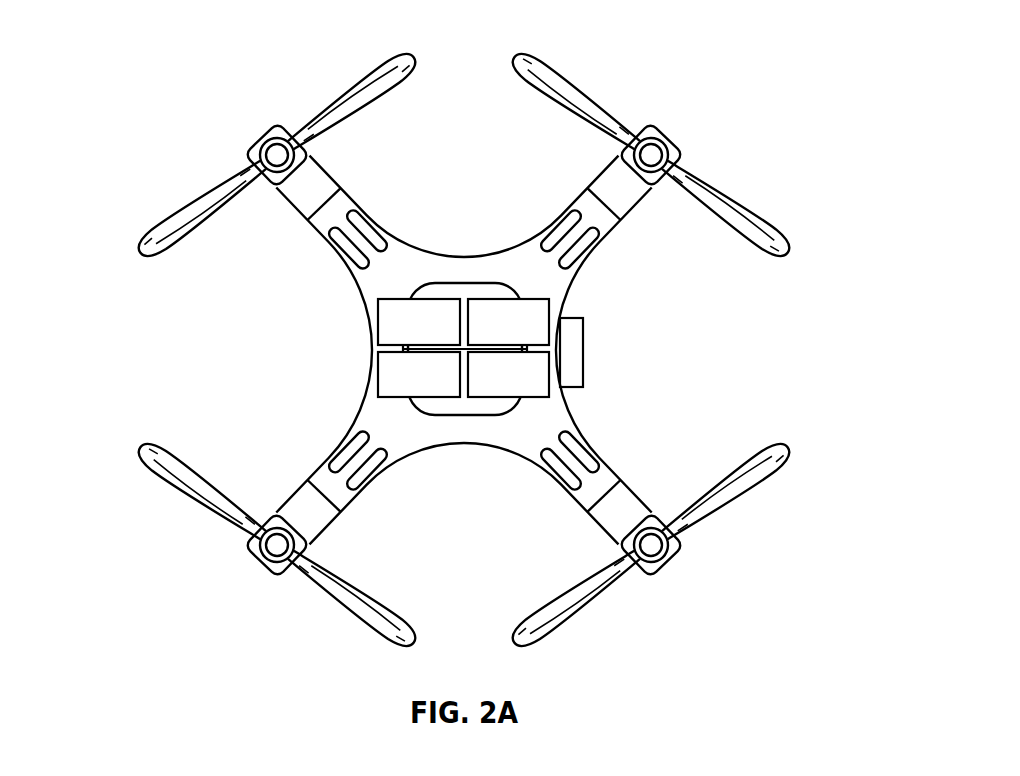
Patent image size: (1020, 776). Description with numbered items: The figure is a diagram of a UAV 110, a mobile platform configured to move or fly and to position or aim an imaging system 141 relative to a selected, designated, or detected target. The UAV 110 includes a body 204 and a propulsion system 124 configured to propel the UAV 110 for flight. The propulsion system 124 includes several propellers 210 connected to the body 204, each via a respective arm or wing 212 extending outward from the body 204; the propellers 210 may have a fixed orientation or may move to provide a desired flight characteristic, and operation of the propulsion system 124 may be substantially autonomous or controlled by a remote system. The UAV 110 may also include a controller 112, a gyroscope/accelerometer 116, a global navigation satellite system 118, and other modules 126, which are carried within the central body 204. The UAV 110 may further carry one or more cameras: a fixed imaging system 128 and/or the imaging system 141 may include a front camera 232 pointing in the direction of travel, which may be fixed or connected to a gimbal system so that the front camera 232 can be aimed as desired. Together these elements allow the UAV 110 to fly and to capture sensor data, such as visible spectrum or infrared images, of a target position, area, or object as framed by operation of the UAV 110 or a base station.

The UAV 110 is at (156, 43).
The controller 112 is at (448, 288).
The gyroscope/accelerometer 116 is at (522, 397).
The global navigation satellite system (GNSS) 118 is at (402, 398).
The propulsion system 124 is at (712, 188).
The other modules 126 is at (492, 288).
The fixed imaging system 128 is at (794, 410).
The imaging system 141 is at (794, 410).
The body 204 is at (371, 331).
The propellers 210 is at (232, 183).
The arms or wings 212 is at (588, 262).
The front camera 232 is at (583, 352).